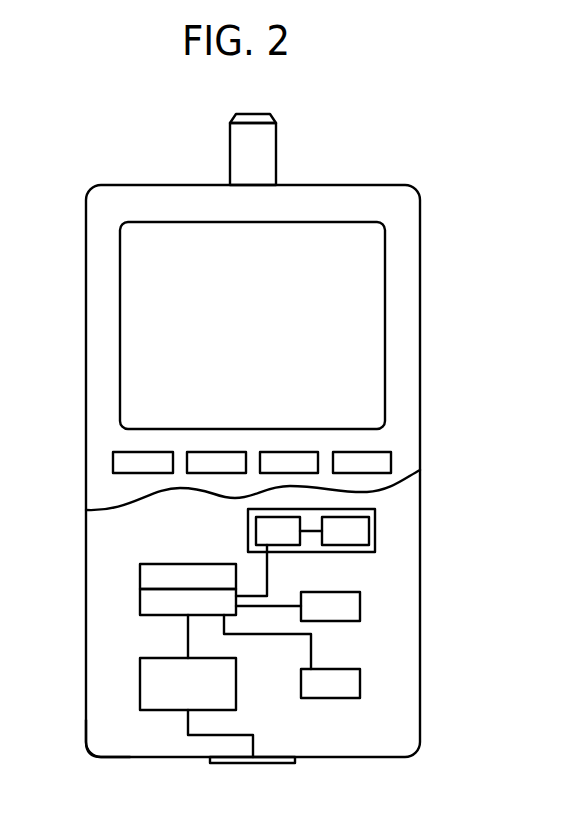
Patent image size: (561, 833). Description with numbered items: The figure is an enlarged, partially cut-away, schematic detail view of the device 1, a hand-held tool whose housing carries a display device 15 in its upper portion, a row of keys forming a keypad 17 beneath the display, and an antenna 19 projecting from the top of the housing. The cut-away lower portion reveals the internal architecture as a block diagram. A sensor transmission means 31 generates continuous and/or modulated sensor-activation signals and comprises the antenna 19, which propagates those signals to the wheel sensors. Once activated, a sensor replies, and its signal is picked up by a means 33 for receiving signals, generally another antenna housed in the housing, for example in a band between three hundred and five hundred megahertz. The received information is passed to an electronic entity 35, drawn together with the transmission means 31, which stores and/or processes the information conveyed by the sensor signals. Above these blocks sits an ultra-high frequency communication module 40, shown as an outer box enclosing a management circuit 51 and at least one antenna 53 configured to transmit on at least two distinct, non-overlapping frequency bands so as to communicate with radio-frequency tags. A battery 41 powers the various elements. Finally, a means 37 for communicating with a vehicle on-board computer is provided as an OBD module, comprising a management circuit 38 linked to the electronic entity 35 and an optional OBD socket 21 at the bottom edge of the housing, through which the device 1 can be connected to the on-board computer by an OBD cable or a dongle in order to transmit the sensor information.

The device 1 is at (393, 154).
The antenna 19 is at (268, 153).
The display device 15 is at (368, 258).
The keypad 17 is at (406, 446).
The ultra-high frequency communication module 40 is at (260, 521).
The management circuit 51 is at (256, 531).
The antenna 53 is at (369, 537).
The sensor transmission means 31 is at (143, 576).
The electronic entity 35 is at (143, 600).
The means for receiving signals 33 is at (355, 601).
The battery 41 is at (355, 684).
The management circuit 38 is at (140, 690).
The OBD socket 21 is at (290, 763).
The means for communicating with an on-board computer 37 is at (108, 737).